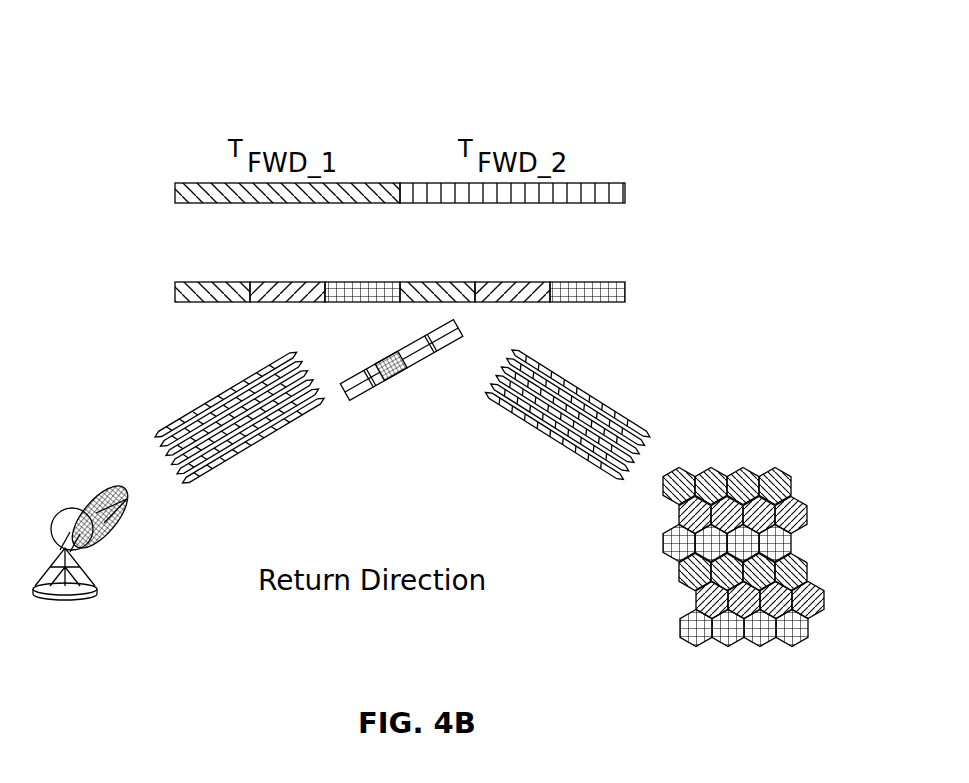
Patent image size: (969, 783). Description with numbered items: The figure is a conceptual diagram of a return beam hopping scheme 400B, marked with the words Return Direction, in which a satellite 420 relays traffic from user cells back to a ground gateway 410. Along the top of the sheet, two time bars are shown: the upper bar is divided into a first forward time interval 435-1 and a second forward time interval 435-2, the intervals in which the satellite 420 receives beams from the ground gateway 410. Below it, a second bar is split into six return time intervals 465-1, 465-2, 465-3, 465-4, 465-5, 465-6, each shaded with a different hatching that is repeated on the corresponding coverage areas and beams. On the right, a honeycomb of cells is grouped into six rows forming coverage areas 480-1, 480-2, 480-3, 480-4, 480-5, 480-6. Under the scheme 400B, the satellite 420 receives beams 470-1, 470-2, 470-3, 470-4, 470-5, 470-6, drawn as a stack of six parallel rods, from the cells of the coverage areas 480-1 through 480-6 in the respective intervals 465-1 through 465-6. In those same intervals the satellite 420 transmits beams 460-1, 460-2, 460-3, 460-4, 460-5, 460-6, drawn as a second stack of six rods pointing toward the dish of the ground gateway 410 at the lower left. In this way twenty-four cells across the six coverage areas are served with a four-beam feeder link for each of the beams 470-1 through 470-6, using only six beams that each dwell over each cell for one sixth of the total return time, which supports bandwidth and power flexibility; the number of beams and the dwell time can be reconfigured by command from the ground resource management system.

The return beam hopping scheme 400B is at (140, 88).
The ground gateway 410 is at (68, 494).
The satellite 420 is at (380, 345).
The time interval 435-1 is at (222, 185).
The time interval 435-2 is at (600, 185).
The beam 460-1 is at (163, 429).
The beam 460-2 is at (225, 397).
The beam 460-3 is at (285, 357).
The beam 460-4 is at (199, 458).
The beam 460-5 is at (259, 431).
The beam 460-6 is at (313, 406).
The time interval 465-1 is at (196, 283).
The time interval 465-2 is at (265, 283).
The time interval 465-3 is at (360, 283).
The time interval 465-4 is at (430, 283).
The time interval 465-5 is at (515, 283).
The time interval 465-6 is at (617, 283).
The beam 470-1 is at (526, 352).
The beam 470-2 is at (568, 383).
The beam 470-3 is at (594, 412).
The beam 470-4 is at (618, 437).
The beam 470-5 is at (552, 437).
The beam 470-6 is at (587, 466).
The coverage area 480-1 is at (722, 471).
The coverage area 480-2 is at (675, 511).
The coverage area 480-3 is at (660, 549).
The coverage area 480-4 is at (680, 584).
The coverage area 480-5 is at (695, 603).
The coverage area 480-6 is at (678, 634).